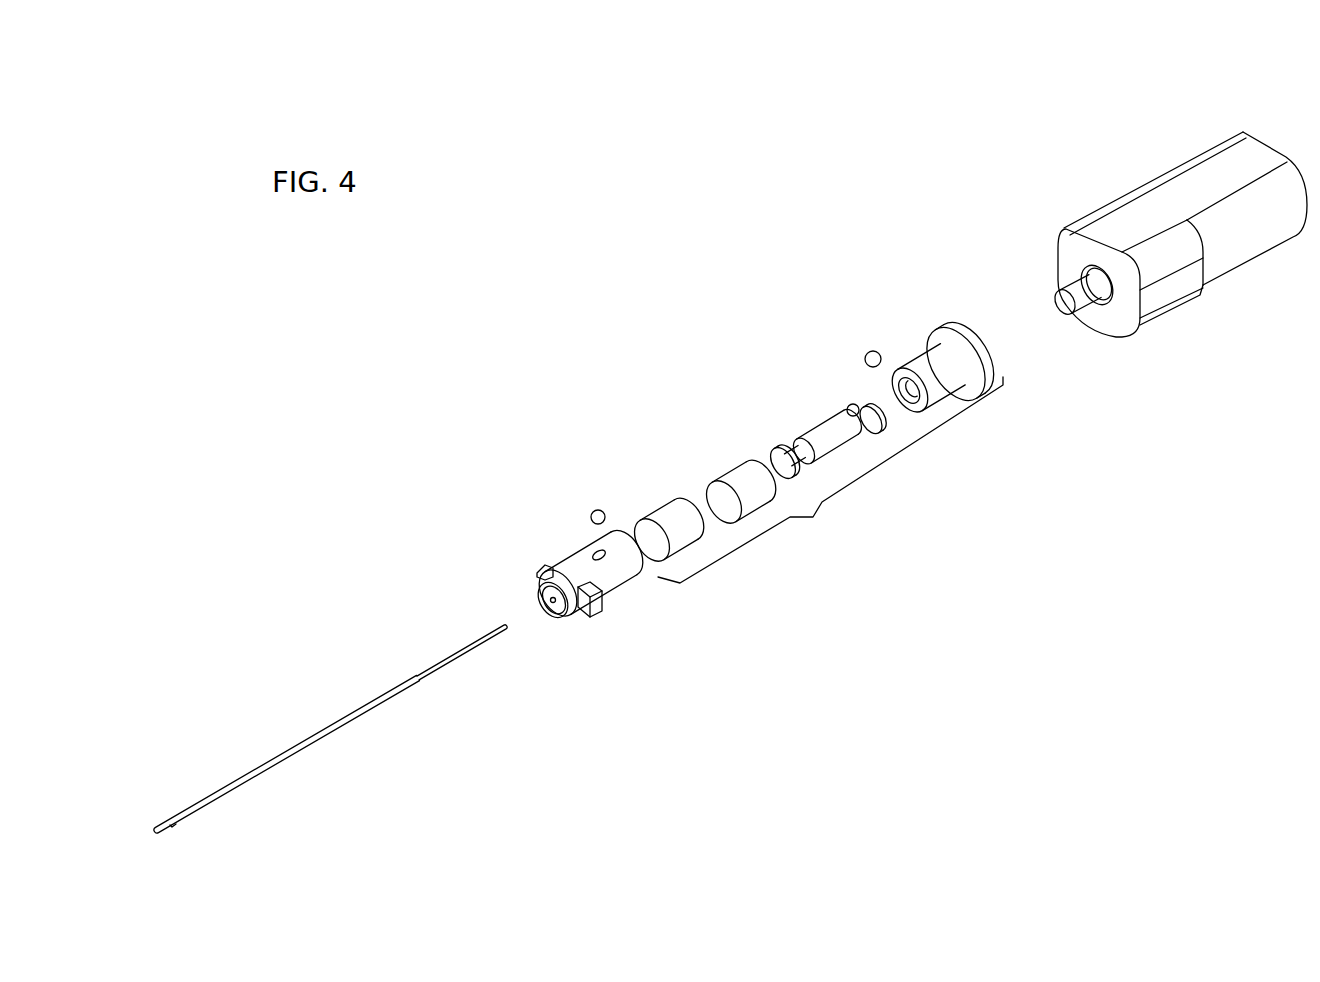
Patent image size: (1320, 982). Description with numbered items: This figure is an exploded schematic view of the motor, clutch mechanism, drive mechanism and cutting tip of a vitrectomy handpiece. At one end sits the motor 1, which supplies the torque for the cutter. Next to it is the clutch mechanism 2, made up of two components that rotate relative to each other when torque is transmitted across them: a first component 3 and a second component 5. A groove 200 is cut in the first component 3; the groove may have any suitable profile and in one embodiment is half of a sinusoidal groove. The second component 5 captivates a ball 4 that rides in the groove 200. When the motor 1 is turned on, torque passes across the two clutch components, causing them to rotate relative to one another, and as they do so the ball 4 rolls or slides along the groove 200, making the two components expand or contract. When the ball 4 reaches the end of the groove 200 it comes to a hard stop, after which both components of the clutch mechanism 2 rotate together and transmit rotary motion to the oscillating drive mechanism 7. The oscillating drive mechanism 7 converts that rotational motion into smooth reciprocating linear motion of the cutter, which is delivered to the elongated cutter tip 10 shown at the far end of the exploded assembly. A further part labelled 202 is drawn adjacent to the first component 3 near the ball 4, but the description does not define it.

The motor 1 is at (1161, 170).
The clutch mechanism 2 is at (830, 480).
The first component 3 is at (863, 386).
The ball 4 is at (872, 328).
The second component 5 is at (672, 510).
The oscillating drive mechanism 7 is at (554, 570).
The cutter tip 10 is at (302, 716).
The groove 200 is at (783, 418).
The end cap of pin 202 is at (837, 384).